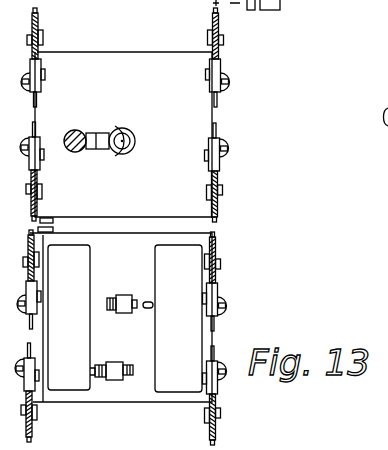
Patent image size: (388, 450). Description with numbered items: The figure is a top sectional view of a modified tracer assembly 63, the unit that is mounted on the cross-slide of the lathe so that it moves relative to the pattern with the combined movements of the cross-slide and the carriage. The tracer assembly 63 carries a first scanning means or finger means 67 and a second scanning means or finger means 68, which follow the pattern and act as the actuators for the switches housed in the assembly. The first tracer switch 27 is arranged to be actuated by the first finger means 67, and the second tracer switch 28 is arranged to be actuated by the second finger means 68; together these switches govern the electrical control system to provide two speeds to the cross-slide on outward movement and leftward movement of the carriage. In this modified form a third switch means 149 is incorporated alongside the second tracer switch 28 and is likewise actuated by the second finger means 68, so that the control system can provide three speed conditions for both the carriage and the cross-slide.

The first tracer switch 27 is at (97, 133).
The tracer assembly 63 is at (252, 232).
The first scanning means 67 is at (40, 218).
The second scanning means 68 is at (53, 232).
The third switch means 149 is at (82, 324).
The second tracer switch 28 is at (190, 332).